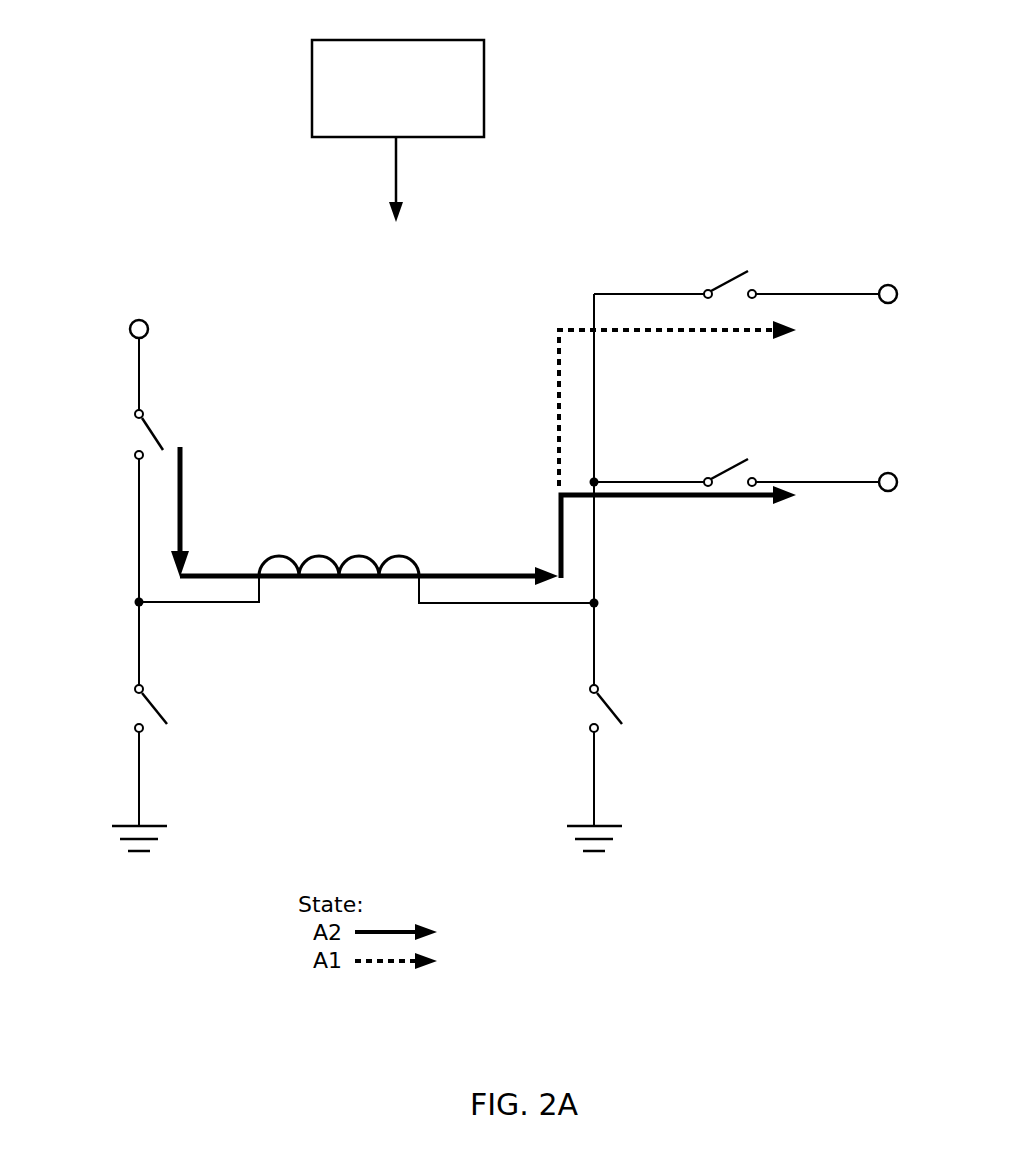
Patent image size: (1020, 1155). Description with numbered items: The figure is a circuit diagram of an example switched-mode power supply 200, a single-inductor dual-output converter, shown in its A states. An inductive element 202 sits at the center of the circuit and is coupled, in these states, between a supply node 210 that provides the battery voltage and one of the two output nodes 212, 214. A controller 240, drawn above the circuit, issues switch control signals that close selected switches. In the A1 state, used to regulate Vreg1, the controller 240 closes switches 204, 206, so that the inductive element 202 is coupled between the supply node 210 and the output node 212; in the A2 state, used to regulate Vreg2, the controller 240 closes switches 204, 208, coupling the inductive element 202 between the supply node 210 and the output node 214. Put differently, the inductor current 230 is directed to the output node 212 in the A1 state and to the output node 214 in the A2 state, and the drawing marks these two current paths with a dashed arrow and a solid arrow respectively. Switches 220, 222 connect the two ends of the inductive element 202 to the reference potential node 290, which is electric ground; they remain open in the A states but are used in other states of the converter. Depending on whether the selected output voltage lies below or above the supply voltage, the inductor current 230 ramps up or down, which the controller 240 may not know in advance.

The switched-mode power supply 200 is at (128, 84).
The controller 240 is at (418, 40).
The supply node 210 is at (130, 329).
The switch 204 is at (157, 434).
The inductive element 202 is at (320, 558).
The inductor current 230 is at (461, 573).
The switch 206 is at (727, 284).
The switch 208 is at (727, 472).
The output node 212 is at (892, 285).
The output node 214 is at (892, 473).
The switch 220 is at (157, 708).
The switch 222 is at (612, 708).
The reference potential node 290 is at (130, 826).